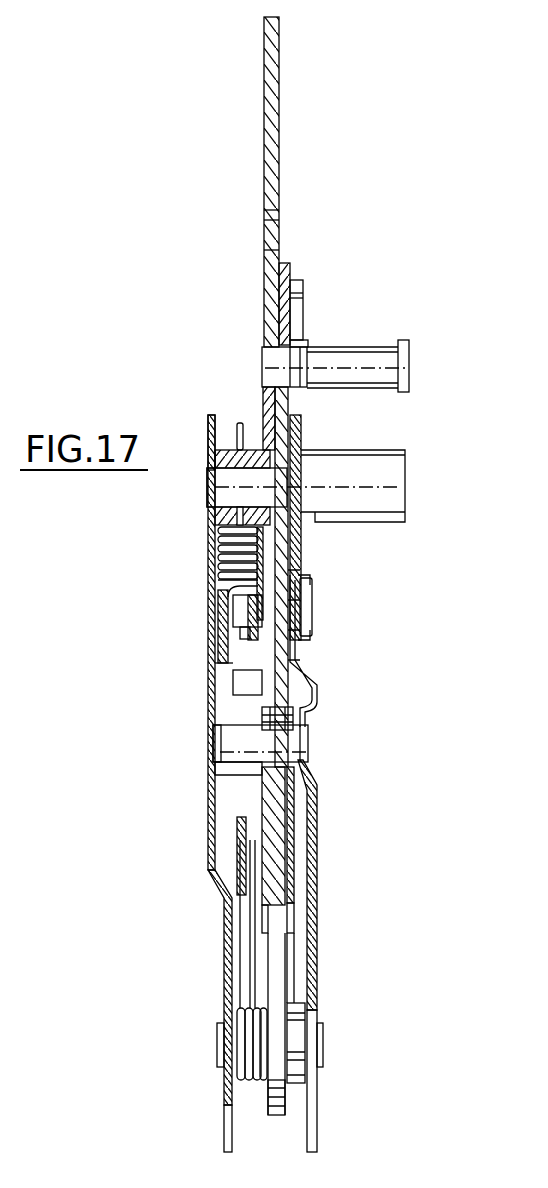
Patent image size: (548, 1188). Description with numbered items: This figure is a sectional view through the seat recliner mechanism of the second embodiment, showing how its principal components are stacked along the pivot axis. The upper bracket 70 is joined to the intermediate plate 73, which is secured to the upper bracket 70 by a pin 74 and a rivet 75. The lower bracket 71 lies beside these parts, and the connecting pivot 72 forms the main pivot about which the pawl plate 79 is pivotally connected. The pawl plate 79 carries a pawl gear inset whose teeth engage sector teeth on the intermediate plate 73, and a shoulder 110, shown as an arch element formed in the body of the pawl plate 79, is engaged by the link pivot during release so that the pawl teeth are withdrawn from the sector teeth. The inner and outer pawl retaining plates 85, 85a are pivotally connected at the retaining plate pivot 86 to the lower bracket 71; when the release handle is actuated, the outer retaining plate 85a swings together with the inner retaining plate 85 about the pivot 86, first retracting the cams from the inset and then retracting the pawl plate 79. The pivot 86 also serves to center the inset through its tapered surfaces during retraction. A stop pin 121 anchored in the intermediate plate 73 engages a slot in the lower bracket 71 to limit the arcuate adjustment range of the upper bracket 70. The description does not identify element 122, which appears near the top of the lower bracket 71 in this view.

The upper bracket 70 is at (282, 86).
The lower bracket 71 is at (313, 833).
The connecting pivot 72 is at (228, 486).
The intermediate plate 73 is at (291, 535).
The pin 74 is at (338, 347).
The rivet 75 is at (301, 280).
The pawl plate 79 is at (263, 420).
The inner pawl retaining plate 85 is at (288, 895).
The outer pawl retaining plate 85a is at (270, 908).
The retaining plate pivot 86 is at (288, 742).
The pawl plate shoulder 110 is at (248, 667).
The stop pin 121 is at (304, 598).
The pin 122 is at (210, 433).